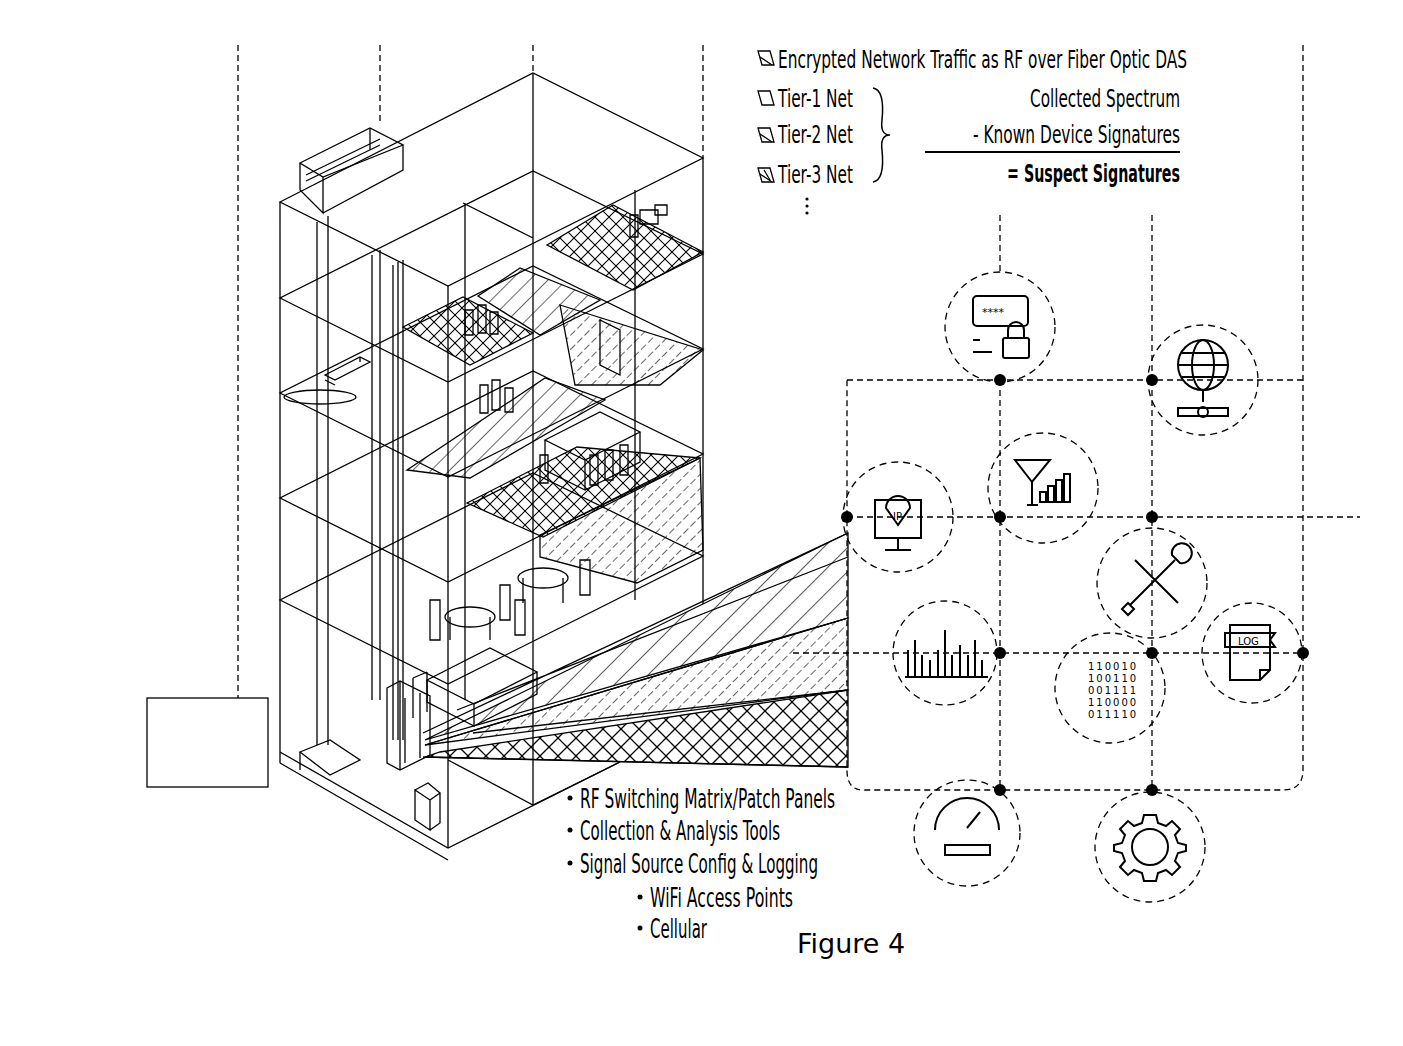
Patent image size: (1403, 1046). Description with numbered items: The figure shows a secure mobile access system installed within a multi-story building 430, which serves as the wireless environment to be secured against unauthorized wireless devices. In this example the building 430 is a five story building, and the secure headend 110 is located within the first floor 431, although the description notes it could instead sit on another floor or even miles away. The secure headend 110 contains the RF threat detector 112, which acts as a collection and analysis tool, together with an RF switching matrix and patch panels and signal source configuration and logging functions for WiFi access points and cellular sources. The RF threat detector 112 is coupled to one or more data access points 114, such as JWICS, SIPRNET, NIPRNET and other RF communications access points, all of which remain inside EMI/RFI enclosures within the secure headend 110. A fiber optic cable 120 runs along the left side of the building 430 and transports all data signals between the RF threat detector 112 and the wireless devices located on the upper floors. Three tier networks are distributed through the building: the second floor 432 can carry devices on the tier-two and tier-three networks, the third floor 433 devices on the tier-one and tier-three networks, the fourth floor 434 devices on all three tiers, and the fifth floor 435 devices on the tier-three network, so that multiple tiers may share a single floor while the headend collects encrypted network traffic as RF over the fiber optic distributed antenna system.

The secure headend 110 is at (372, 823).
The RF threat detector 112 is at (385, 755).
The data access points 114 is at (231, 760).
The fiber optic cable 120 is at (285, 395).
The building 430 is at (430, 122).
The first floor 431 is at (297, 672).
The second floor 432 is at (297, 540).
The third floor 433 is at (297, 452).
The fourth floor 434 is at (297, 336).
The fifth floor 435 is at (297, 272).